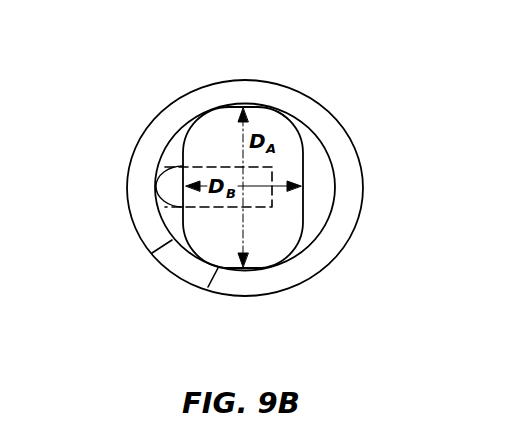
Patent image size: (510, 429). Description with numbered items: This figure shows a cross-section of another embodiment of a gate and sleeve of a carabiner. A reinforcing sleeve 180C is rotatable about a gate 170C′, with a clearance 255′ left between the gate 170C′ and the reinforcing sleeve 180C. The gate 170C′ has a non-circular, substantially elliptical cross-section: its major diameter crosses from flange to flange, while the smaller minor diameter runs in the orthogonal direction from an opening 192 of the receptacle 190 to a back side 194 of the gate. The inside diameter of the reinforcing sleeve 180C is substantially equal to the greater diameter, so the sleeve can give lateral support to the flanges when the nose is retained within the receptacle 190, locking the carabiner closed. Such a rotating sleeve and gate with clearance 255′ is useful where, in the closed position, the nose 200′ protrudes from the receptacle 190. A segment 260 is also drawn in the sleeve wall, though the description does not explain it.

The reinforcing sleeve 180C is at (337, 237).
The removable segment of ring 260 is at (209, 287).
The gate 170C′ is at (262, 122).
The receptacle 190 is at (222, 166).
The opening 192 is at (172, 182).
The clearance 255′ is at (313, 155).
The back side 194 is at (305, 177).
The nose 200′ is at (172, 193).